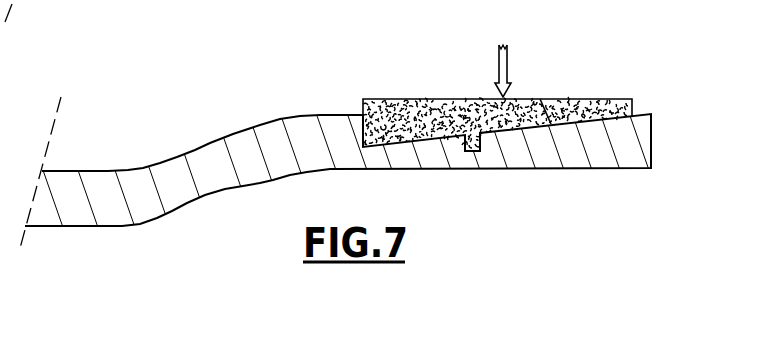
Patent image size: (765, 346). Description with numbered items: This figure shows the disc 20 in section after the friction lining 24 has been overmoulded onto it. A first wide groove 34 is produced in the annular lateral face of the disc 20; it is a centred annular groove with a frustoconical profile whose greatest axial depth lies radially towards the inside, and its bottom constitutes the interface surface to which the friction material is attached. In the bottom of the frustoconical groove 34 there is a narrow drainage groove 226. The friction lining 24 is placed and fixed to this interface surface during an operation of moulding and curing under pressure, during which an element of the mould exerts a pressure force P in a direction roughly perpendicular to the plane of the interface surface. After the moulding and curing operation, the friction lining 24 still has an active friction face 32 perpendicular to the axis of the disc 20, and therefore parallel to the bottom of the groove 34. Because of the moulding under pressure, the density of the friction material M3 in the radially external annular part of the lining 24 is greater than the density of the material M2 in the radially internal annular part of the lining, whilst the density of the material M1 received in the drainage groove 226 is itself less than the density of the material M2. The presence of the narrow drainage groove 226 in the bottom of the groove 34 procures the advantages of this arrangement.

The disc 20 is at (653, 139).
The friction lining 24 is at (360, 99).
The active friction face 32 is at (447, 97).
The first wide groove 34 is at (540, 99).
The drainage groove 226 is at (464, 147).
The friction material in drainage groove M1 is at (473, 152).
The friction material in radially internal part M2 is at (388, 112).
The friction material in radially external part M3 is at (611, 99).
The pressure force P is at (511, 71).